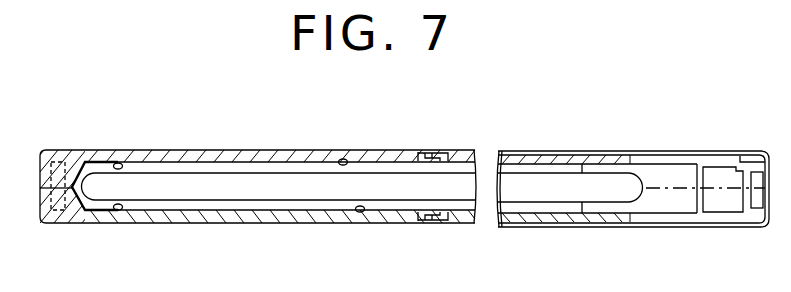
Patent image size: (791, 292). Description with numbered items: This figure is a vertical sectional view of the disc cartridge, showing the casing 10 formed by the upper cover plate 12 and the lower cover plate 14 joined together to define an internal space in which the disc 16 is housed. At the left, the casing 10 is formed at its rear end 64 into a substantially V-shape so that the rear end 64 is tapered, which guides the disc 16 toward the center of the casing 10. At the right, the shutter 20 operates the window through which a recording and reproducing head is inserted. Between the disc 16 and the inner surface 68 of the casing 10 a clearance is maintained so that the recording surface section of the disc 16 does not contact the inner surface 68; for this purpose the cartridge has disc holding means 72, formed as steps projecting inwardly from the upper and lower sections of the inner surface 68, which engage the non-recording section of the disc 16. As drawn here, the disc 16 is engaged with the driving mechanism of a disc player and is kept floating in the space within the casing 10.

The casing 10 is at (41, 138).
The upper cover plate 12 is at (61, 158).
The lower cover plate 14 is at (47, 224).
The disc 16 is at (297, 172).
The shutter 20 is at (521, 151).
The tapered rear end 64 is at (88, 163).
The inner surface 68 is at (346, 160).
The disc holding means 72 is at (122, 166).